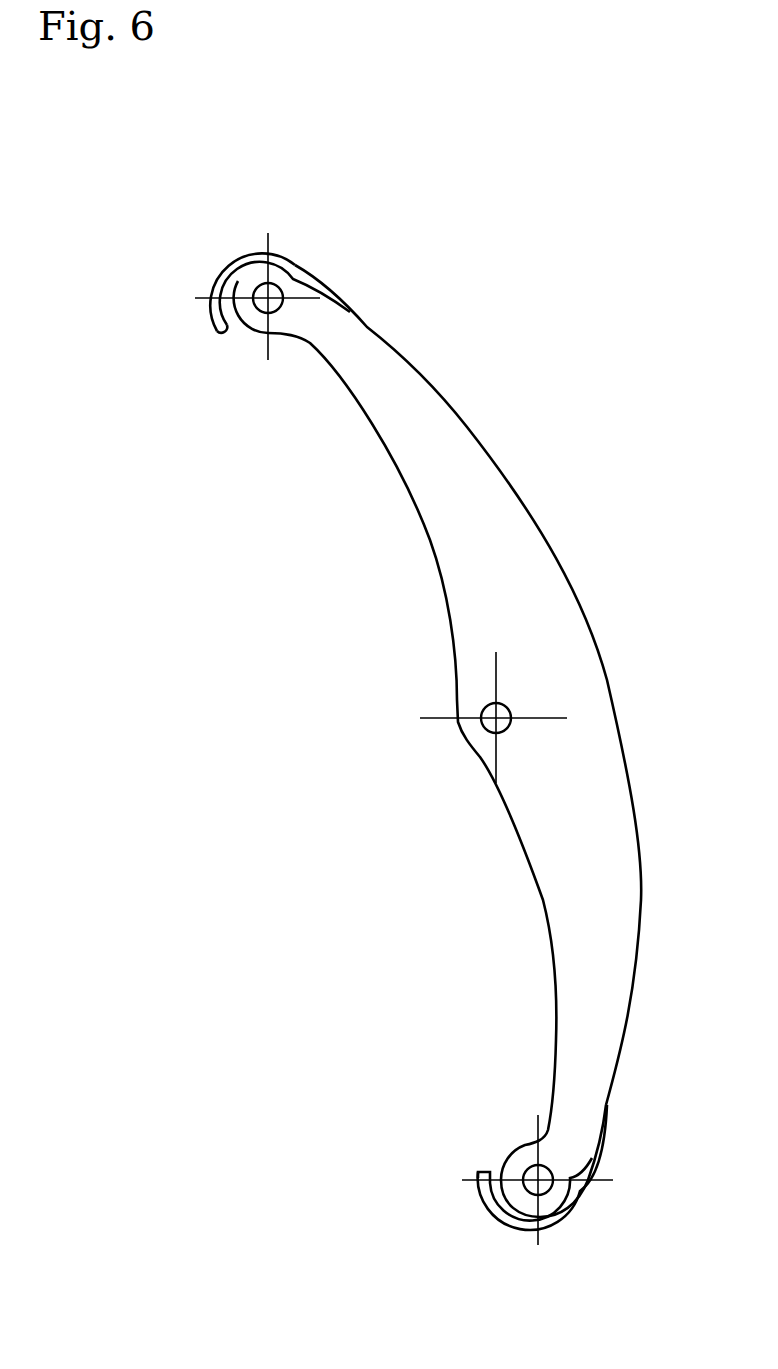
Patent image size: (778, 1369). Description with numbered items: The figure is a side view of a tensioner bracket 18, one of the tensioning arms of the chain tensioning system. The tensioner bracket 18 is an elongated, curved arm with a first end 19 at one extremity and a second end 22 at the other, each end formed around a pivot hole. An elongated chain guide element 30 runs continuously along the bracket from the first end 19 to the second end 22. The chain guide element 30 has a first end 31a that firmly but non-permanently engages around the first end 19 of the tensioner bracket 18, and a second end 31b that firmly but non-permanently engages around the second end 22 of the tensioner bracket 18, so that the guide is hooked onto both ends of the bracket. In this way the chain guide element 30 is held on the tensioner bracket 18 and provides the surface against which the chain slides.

The tensioner bracket 18 is at (497, 513).
The first end 19 is at (522, 1155).
The second end 22 is at (257, 322).
The chain guide element 30 is at (307, 275).
The first end 31a is at (477, 1182).
The second end 31b is at (215, 322).